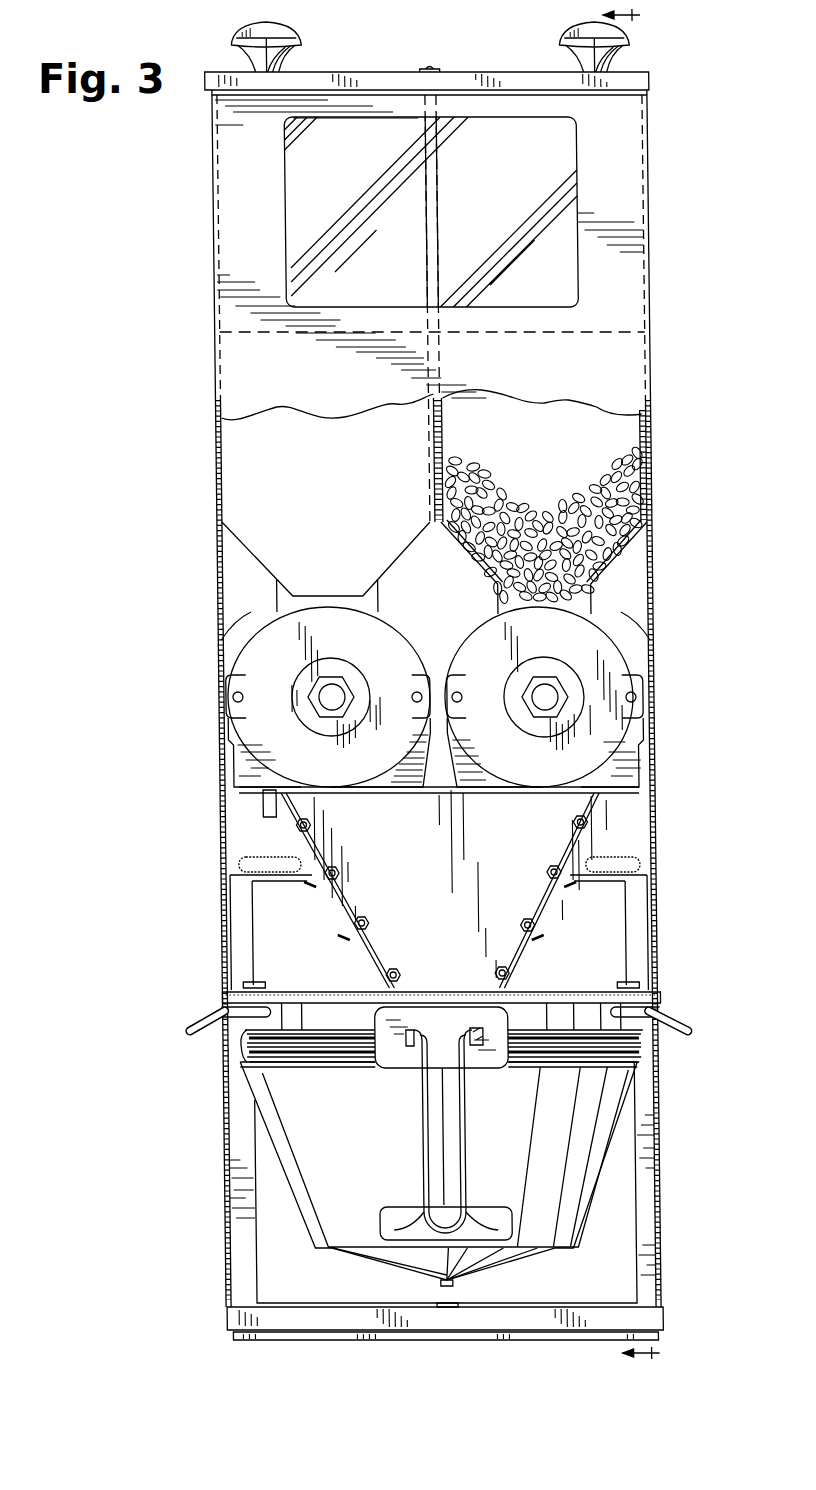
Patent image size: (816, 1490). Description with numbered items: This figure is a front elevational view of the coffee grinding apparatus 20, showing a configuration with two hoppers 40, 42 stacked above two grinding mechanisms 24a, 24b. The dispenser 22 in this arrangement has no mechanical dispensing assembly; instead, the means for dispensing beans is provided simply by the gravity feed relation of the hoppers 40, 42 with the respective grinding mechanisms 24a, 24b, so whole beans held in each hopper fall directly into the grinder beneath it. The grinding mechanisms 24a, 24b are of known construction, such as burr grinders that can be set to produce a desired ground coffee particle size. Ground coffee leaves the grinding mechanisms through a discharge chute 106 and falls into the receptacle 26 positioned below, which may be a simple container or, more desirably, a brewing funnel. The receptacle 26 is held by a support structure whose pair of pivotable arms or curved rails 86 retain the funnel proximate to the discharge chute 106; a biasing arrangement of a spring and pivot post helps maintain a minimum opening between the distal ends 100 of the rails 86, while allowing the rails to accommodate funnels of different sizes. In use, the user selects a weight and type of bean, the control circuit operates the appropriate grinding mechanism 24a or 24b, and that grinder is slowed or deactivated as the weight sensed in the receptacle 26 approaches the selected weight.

The coffee grinding apparatus 20 is at (170, 282).
The dispenser 22 is at (206, 550).
The hopper 40 is at (248, 443).
The hopper 42 is at (623, 433).
The grinding mechanism 24a is at (252, 650).
The grinding mechanism 24b is at (632, 650).
The discharge chute 106 is at (557, 911).
The distal ends 100 is at (218, 1005).
The curved rails 86 is at (201, 1010).
The receptacle 26 is at (586, 1162).